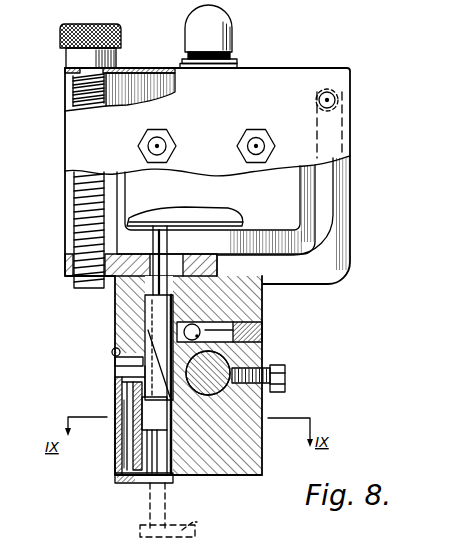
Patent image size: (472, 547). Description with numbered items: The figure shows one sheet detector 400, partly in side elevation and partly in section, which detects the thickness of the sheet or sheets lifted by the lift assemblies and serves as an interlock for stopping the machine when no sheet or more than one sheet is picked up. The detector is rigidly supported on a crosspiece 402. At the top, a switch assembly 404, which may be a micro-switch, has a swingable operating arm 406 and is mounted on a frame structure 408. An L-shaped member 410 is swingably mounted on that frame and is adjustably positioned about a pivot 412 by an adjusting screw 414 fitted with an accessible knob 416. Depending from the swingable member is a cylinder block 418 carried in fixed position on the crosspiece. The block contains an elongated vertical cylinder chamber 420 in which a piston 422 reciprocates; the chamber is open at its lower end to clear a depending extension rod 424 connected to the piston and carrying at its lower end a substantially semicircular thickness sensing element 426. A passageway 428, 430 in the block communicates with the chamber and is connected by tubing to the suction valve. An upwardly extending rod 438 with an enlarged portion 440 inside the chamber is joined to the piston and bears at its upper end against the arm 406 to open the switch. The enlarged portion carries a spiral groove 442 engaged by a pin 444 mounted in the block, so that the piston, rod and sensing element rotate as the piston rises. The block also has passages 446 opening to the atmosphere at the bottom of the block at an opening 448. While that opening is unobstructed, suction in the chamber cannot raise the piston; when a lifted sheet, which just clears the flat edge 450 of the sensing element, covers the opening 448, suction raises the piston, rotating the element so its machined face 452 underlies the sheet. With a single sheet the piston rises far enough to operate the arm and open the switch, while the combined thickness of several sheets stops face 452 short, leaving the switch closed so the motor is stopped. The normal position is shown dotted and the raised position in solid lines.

The sheet detector 400 is at (356, 119).
The crosspiece 402 is at (247, 362).
The switch assembly 404 is at (297, 202).
The operating arm 406 is at (190, 221).
The frame structure 408 is at (143, 68).
The L-shaped member 410 is at (328, 239).
The pivot 412 is at (336, 97).
The adjusting screw 414 is at (66, 253).
The knob 416 is at (61, 39).
The cylinder block 418 is at (254, 302).
The cylinder chamber 420 is at (188, 388).
The piston 422 is at (163, 420).
The extension rod 424 is at (196, 474).
The thickness sensing element 426 is at (123, 484).
The passageway 428 is at (190, 326).
The passageway 430 is at (262, 339).
The rod 438 is at (157, 289).
The enlarged portion 440 is at (118, 363).
The spiral groove 442 is at (144, 322).
The pin 444 is at (112, 351).
The passages 446 is at (140, 385).
The passage opening 448 is at (122, 465).
The flat edge 450 is at (140, 533).
The machined face 452 is at (218, 33).